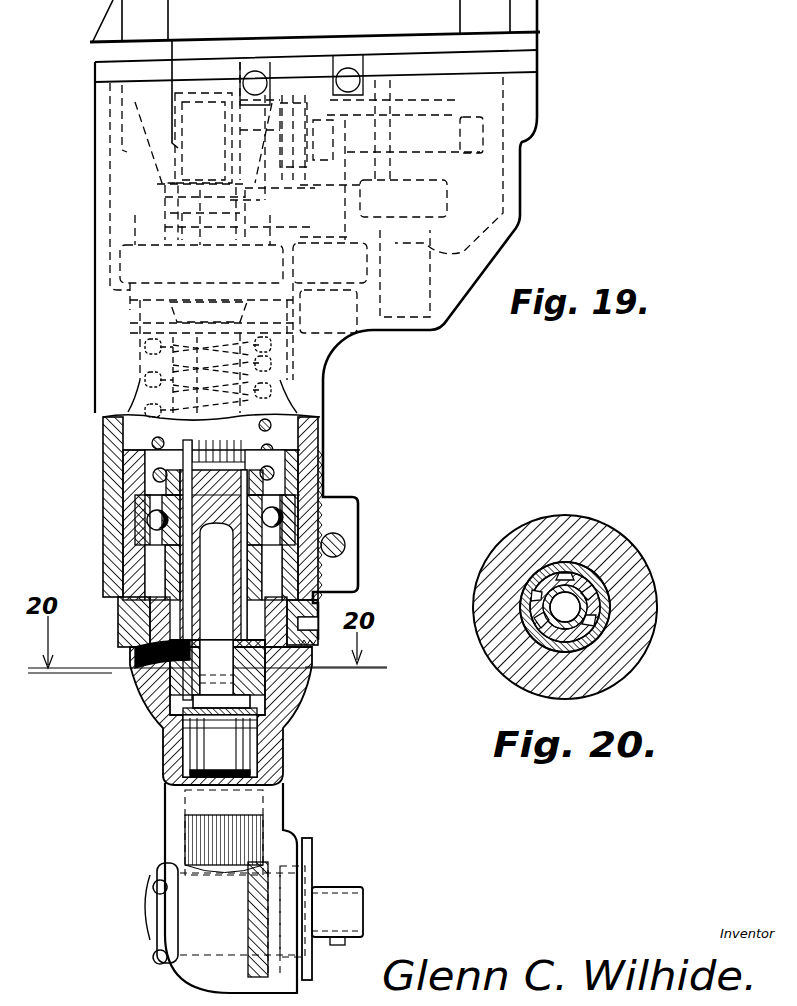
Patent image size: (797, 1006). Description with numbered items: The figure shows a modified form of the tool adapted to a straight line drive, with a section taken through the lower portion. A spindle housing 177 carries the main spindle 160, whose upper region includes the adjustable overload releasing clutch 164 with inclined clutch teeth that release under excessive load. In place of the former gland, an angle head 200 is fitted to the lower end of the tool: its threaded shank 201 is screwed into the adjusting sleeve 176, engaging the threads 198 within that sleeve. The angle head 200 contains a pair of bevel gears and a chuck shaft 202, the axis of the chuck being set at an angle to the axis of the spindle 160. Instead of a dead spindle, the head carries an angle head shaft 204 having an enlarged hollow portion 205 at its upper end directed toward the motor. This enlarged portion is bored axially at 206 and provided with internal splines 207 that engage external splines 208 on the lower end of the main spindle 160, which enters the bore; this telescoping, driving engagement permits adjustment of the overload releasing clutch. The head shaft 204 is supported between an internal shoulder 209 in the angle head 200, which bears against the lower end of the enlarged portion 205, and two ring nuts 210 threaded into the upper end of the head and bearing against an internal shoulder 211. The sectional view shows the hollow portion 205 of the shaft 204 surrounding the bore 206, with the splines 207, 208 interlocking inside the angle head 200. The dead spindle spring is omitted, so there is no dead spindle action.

In FIG. 19, the overload releasing clutch 164 is at (135, 316).
In FIG. 19, the spindle housing 177 is at (326, 431).
In FIG. 19, the main spindle 160 is at (127, 462).
In FIG. 19, the adjusting sleeve 176 is at (138, 558).
In FIG. 19, the threaded shank 201 is at (143, 590).
In FIG. 19, the threads 198 is at (145, 623).
In FIG. 19, the internal shoulder 211 is at (150, 654).
In FIG. 19, the external splines 208 is at (150, 686).
In FIG. 20, the external splines 208 is at (582, 590).
In FIG. 19, the hollow portion 205 is at (140, 688).
In FIG. 20, the hollow portion 205 is at (605, 570).
In FIG. 19, the internal shoulder 209 is at (175, 738).
In FIG. 19, the angle head shaft 204 is at (192, 762).
In FIG. 19, the ring nuts 210 is at (202, 628).
In FIG. 19, the bore 206 is at (195, 660).
In FIG. 20, the bore 206 is at (566, 582).
In FIG. 19, the internal splines 207 is at (215, 690).
In FIG. 20, the internal splines 207 is at (575, 585).
In FIG. 19, the angle head 200 is at (283, 787).
In FIG. 20, the angle head 200 is at (655, 576).
In FIG. 19, the chuck shaft 202 is at (340, 887).